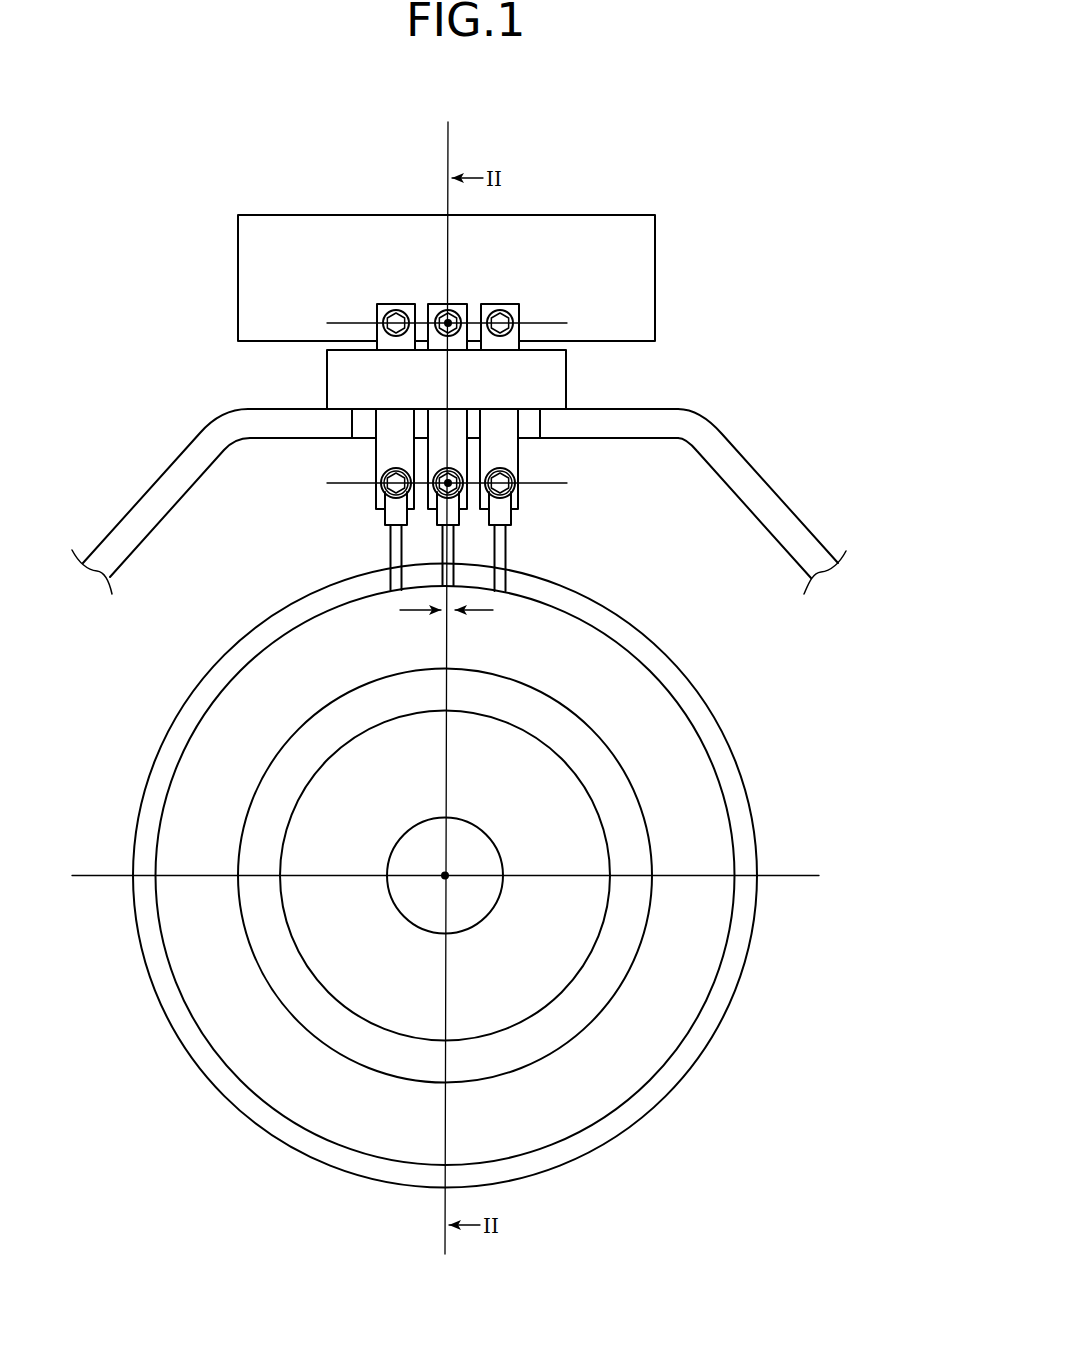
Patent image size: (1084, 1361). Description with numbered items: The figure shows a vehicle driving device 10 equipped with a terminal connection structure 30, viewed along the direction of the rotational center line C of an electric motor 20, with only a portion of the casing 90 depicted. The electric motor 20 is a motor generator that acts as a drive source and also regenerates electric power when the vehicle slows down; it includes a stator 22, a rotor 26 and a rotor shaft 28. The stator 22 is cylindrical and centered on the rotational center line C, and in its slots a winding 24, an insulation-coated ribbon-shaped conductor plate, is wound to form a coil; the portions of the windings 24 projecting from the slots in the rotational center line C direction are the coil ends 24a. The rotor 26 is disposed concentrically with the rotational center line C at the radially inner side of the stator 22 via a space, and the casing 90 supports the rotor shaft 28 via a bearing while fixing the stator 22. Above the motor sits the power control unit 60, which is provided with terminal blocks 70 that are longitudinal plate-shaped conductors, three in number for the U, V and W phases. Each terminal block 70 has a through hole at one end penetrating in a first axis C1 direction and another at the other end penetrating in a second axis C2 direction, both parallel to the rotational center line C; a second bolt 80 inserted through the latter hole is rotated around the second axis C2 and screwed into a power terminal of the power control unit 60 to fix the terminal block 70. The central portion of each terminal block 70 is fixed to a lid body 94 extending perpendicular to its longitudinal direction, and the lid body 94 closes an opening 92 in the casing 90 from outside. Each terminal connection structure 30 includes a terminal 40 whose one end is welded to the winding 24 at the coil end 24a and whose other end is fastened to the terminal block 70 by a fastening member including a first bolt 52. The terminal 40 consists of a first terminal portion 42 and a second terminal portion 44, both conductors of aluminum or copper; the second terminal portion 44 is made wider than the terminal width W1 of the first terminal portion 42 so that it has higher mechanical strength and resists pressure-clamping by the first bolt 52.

The vehicle driving device 10 is at (835, 168).
The electric motor 20 is at (464, 876).
The stator 22 is at (671, 680).
The winding 24 is at (709, 745).
The coil end 24a is at (581, 658).
The rotor 26 is at (364, 994).
The rotor shaft 28 is at (475, 899).
The terminal connection structure 30 is at (328, 559).
The terminal 40 is at (480, 578).
The first terminal portion 42 is at (568, 507).
The second terminal portion 44 is at (502, 515).
The first bolt 52 is at (387, 470).
The power control unit 60 is at (675, 254).
The terminal block 70 is at (517, 338).
The second bolt 80 is at (393, 311).
The casing 90 is at (741, 455).
The opening 92 is at (356, 432).
The lid body 94 is at (555, 383).
The rotational center line C is at (445, 877).
The first axis C1 is at (448, 482).
The second axis C2 is at (448, 325).
The terminal width W1 is at (458, 613).